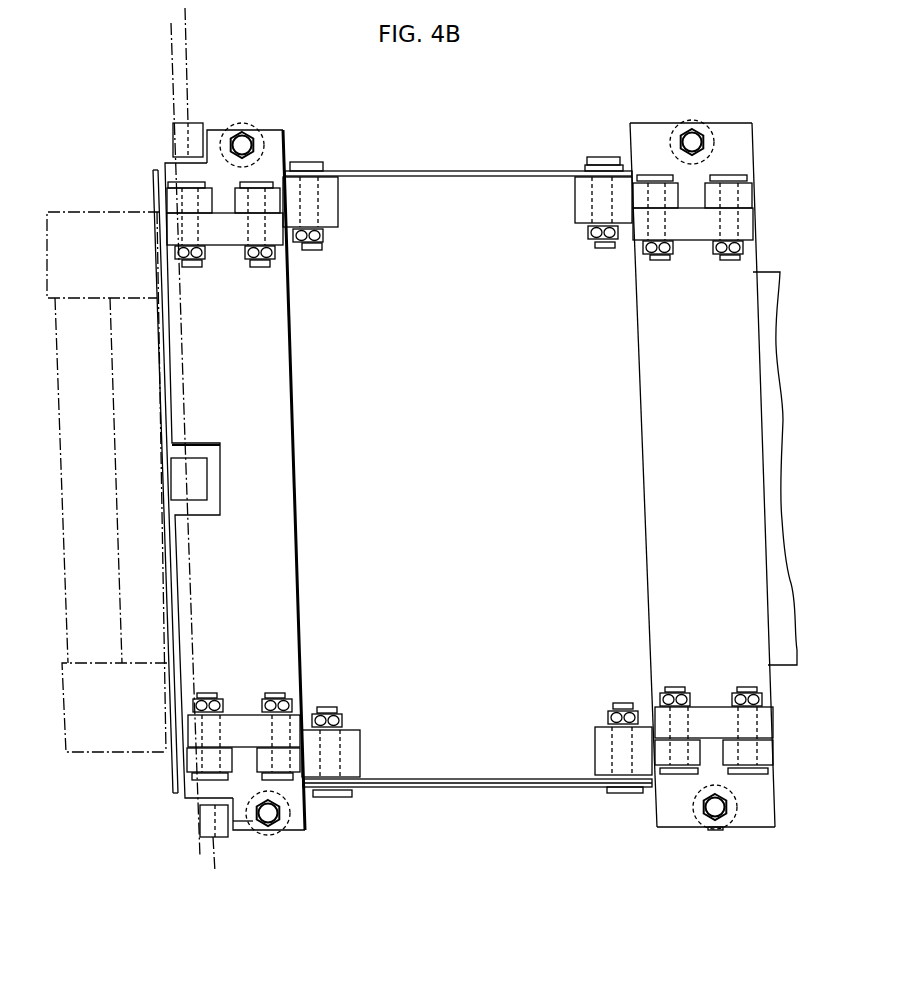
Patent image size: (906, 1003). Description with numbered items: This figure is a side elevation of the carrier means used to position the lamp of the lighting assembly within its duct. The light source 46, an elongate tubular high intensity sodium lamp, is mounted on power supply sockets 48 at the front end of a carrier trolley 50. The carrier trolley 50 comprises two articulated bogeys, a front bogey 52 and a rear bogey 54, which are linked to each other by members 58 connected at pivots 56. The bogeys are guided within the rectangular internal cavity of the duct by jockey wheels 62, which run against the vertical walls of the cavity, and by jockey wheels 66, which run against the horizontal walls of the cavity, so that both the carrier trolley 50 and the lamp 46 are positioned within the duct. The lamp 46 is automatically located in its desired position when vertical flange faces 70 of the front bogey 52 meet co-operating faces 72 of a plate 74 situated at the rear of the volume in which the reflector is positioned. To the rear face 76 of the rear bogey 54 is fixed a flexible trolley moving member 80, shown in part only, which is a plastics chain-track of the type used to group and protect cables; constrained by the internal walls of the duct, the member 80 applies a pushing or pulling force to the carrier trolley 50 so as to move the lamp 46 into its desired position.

The light source 46 is at (110, 438).
The power supply sockets 48 is at (87, 217).
The carrier trolley 50 is at (393, 138).
The front bogey 52 is at (287, 124).
The rear bogey 54 is at (736, 116).
The pivots 56 is at (597, 158).
The members 58 is at (423, 178).
The jockey wheels 62 is at (240, 130).
The jockey wheels 66 is at (742, 196).
The vertical flange faces 70 is at (203, 138).
The co-operating faces 72 is at (262, 830).
The plate 74 is at (170, 57).
The rear face 76 is at (777, 771).
The flexible trolley moving member 80 is at (760, 455).